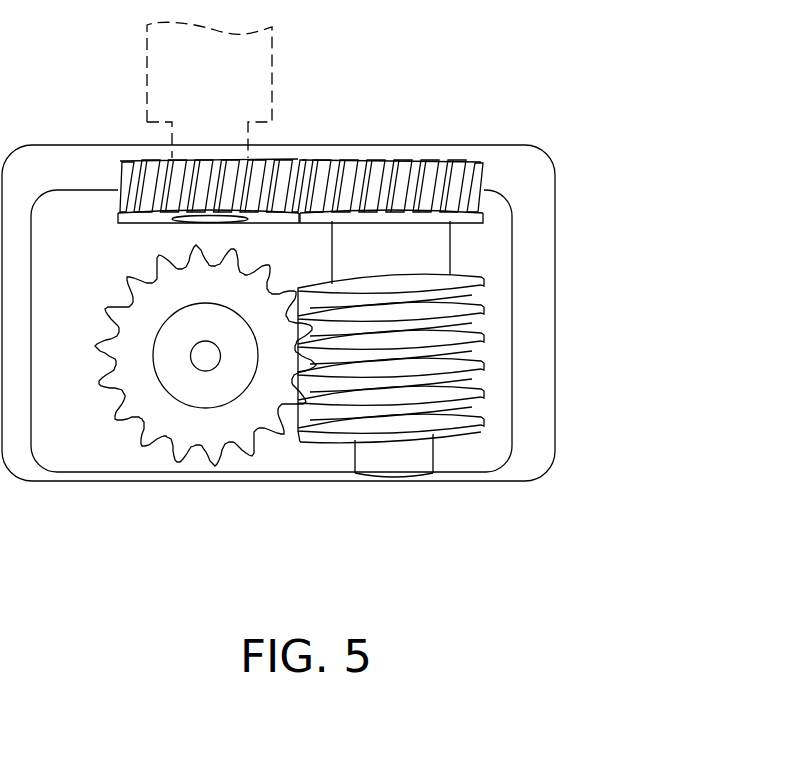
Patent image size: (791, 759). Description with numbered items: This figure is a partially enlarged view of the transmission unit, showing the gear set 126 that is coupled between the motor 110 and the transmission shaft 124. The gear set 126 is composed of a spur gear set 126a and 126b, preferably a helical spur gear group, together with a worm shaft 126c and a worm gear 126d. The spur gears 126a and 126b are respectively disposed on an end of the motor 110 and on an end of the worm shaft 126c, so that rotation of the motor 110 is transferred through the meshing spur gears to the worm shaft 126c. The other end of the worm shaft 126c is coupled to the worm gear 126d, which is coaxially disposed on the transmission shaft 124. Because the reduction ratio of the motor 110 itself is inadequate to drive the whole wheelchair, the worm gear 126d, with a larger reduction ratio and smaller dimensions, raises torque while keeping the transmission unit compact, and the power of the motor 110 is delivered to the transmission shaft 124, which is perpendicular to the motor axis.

The motor 110 is at (143, 50).
The transmission shaft 124 is at (195, 393).
The gear set 126 is at (567, 62).
The spur gear 126a is at (293, 167).
The spur gear 126b is at (437, 167).
The worm shaft 126c is at (481, 333).
The worm gear 126d is at (272, 425).